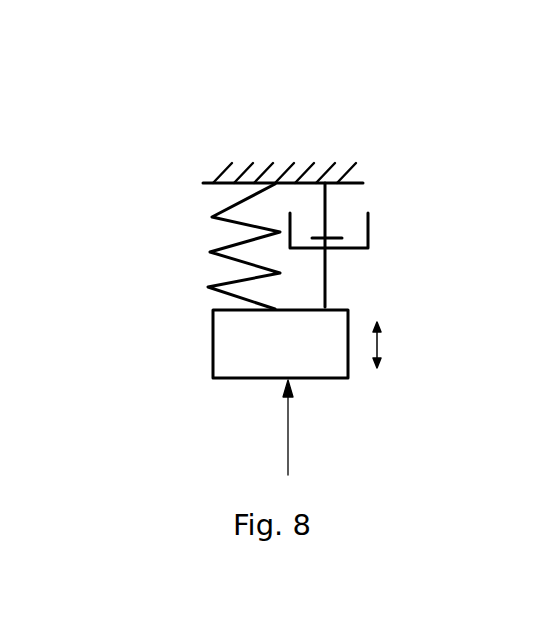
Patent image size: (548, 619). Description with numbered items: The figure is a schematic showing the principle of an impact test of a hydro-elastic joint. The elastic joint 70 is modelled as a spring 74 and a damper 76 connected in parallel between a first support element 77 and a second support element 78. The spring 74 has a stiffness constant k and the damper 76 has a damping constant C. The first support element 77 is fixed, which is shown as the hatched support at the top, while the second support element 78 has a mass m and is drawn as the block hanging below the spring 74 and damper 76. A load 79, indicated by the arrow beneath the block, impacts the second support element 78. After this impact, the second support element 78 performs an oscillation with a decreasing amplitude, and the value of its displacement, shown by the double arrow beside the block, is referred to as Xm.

The elastic joint 70 is at (185, 133).
The spring 74 is at (212, 218).
The damper 76 is at (395, 203).
The first support element 77 is at (213, 182).
The second support element 78 is at (230, 345).
The load 79 is at (287, 440).